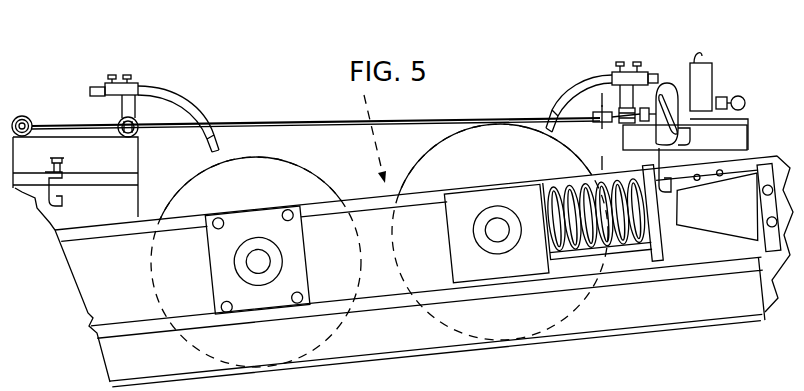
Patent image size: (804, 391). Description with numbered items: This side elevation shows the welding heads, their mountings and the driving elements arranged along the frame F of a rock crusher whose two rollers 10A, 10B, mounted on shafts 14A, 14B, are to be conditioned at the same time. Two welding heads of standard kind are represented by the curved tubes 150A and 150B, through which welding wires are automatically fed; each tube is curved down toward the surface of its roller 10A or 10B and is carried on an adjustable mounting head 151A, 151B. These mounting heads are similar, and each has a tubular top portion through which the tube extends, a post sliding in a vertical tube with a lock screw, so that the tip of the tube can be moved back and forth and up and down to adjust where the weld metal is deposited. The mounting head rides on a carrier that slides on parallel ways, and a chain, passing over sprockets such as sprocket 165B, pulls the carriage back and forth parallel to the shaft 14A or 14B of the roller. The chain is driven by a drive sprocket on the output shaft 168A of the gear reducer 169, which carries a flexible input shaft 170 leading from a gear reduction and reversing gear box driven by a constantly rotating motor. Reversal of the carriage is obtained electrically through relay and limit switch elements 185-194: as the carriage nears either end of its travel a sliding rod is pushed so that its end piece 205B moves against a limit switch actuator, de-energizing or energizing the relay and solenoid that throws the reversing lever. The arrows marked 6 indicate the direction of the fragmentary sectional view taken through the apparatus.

The frame F is at (662, 271).
The shaft 14B is at (258, 249).
The shaft 14A is at (497, 217).
The roller 10B is at (291, 160).
The roller 10A is at (424, 178).
The curved tube 150B is at (219, 134).
The adjustable mounting head 151B is at (140, 82).
The chain sprocket 165B is at (127, 124).
The curved tube 150A is at (547, 112).
The adjustable mounting head 151A is at (630, 62).
The output shaft 168A is at (602, 123).
The section line 6- 6 is at (597, 100).
The gear reducer 169 is at (661, 82).
The flexible input shaft 170 is at (678, 107).
The relay and limit switch circuit elements 185-194 is at (698, 66).
The end piece 205B is at (741, 97).